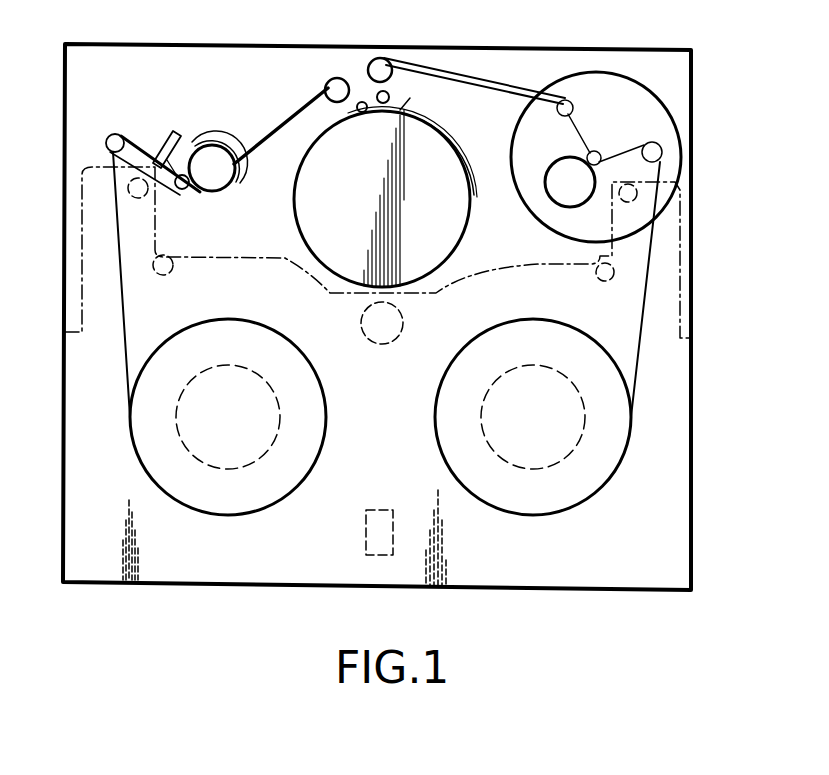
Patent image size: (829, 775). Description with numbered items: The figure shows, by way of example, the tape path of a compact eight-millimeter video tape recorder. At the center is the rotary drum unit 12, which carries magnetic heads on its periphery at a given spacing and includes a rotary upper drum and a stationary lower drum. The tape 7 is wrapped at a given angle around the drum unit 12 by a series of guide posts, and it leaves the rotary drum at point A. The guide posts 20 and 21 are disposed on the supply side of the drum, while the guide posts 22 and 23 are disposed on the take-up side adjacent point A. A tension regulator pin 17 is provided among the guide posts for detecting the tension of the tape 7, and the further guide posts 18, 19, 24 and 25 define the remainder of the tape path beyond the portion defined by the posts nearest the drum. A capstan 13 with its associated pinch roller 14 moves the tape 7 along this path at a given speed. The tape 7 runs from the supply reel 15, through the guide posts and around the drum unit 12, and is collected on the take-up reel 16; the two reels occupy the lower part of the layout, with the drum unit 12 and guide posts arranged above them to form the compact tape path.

The tape 7 is at (650, 363).
The rotary drum unit 12 is at (422, 143).
The capstan 13 is at (592, 152).
The pinch roller 14 is at (580, 193).
The supply reel 15 is at (142, 418).
The take-up reel 16 is at (600, 485).
The tension regulator pin 17 is at (114, 133).
The guide post 18 is at (167, 153).
The guide post 19 is at (208, 153).
The guide post 20 is at (331, 87).
The guide post 21 is at (360, 101).
The guide post 22 is at (378, 58).
The guide post 23 is at (388, 95).
The guide post 24 is at (560, 100).
The guide post 25 is at (660, 153).
The point A is at (407, 100).